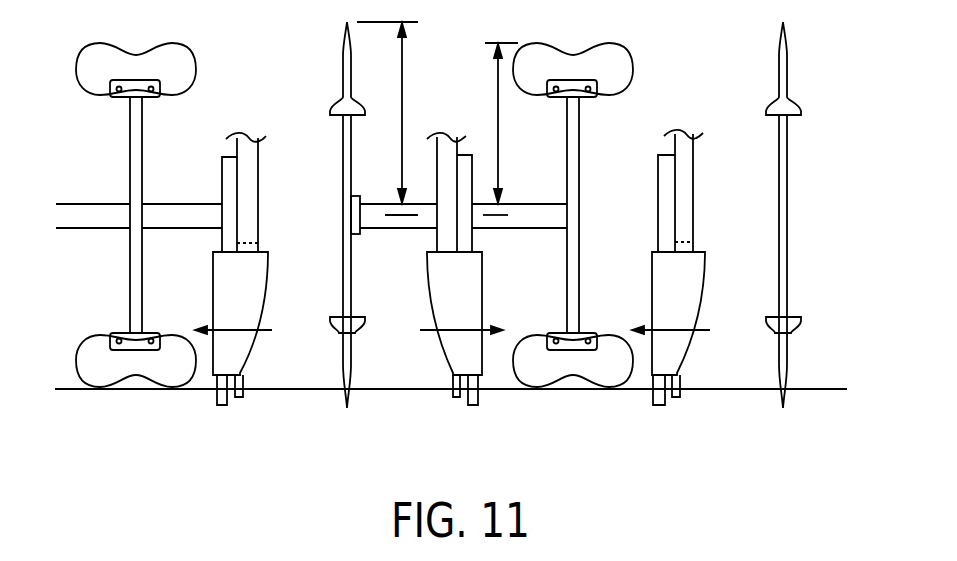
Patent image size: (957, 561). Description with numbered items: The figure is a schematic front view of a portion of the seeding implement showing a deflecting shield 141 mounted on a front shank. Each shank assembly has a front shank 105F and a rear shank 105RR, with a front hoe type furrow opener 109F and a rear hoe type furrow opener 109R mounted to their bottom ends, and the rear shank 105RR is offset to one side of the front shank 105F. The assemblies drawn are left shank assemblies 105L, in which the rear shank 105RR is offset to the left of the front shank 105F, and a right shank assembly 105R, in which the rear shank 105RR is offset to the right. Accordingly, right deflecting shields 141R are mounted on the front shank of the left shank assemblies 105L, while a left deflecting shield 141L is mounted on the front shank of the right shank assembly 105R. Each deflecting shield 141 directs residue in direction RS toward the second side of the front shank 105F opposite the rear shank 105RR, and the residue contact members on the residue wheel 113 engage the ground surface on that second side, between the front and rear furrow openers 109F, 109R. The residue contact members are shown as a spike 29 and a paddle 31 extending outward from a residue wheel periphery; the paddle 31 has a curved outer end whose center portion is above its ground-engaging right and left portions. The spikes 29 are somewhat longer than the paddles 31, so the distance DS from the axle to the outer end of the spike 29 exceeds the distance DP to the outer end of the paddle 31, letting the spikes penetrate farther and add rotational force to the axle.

The spike 29 is at (343, 48).
The paddle 31 is at (633, 52).
The residue wheel 113 is at (789, 213).
The left shank assembly 105L is at (244, 126).
The right shank assembly 105R is at (463, 414).
The front shank 105F is at (222, 208).
The rear shank 105RR is at (296, 184).
The left deflecting shield 141L is at (483, 290).
The right deflecting shield 141R is at (489, 344).
The deflecting shield 141 is at (688, 351).
The front hoe type furrow opener 109F is at (222, 405).
The rear hoe type furrow opener 109R is at (239, 405).
The spike distance DS is at (405, 63).
The paddle distance DP is at (497, 103).
The residue deflection direction RS is at (688, 334).